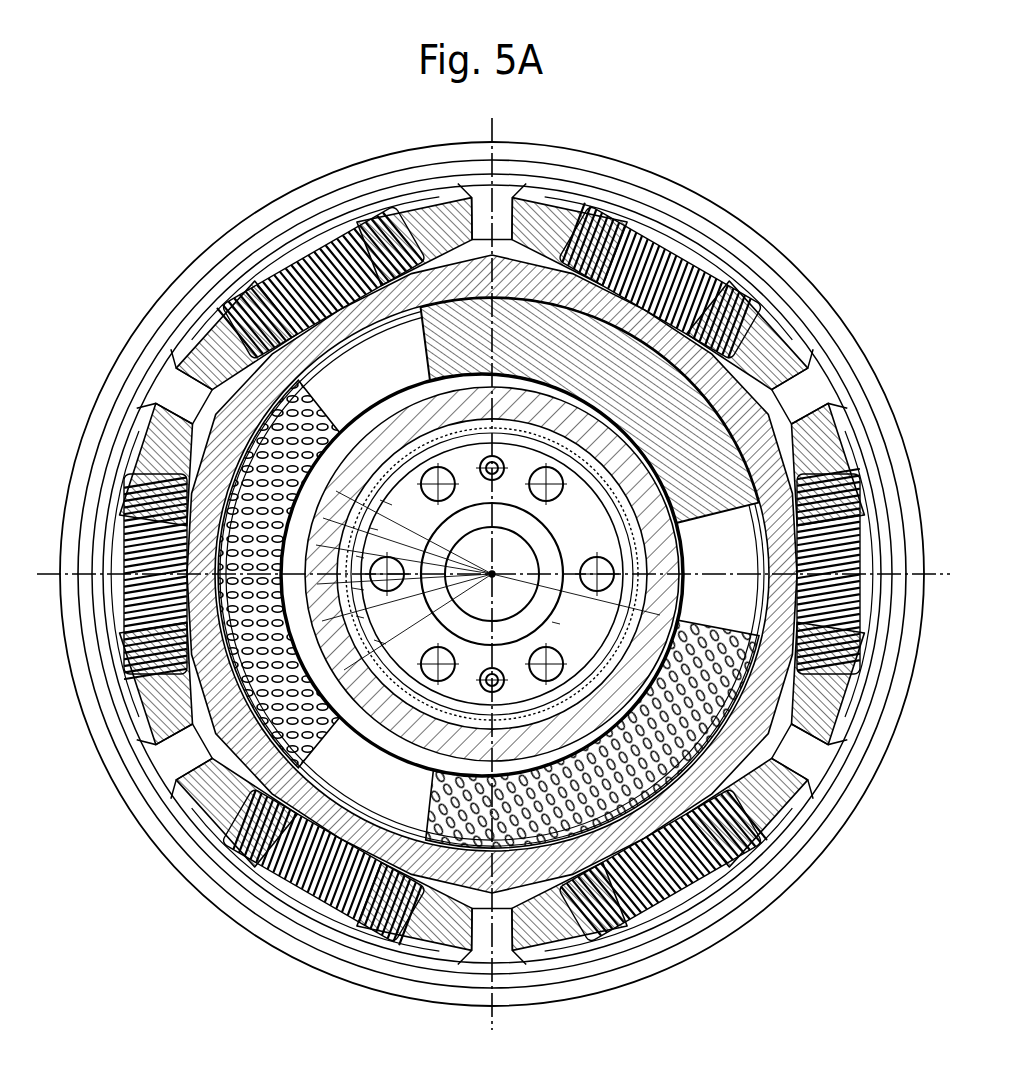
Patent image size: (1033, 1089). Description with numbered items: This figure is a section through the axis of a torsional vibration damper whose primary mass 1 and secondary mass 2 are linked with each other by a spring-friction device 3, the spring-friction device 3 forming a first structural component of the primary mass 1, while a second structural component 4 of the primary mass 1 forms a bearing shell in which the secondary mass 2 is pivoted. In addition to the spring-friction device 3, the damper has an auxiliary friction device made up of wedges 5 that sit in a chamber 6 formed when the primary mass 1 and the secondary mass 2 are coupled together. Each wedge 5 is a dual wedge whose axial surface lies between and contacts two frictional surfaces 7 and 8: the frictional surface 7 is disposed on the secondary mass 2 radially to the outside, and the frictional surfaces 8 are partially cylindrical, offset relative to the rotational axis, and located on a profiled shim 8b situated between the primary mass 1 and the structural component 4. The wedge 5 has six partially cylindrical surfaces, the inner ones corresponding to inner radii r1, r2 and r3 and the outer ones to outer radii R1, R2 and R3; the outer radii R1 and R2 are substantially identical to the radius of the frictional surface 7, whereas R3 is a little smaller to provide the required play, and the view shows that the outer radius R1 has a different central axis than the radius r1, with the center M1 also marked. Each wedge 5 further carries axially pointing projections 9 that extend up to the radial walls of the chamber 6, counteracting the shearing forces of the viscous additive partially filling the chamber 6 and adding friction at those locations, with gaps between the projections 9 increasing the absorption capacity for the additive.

The primary mass 1 is at (506, 200).
The secondary mass 2 is at (678, 272).
The spring-friction device 3 is at (582, 203).
The second structural component 4 is at (308, 266).
The wedge 5 is at (746, 392).
The chamber 6 is at (390, 778).
The frictional surface 7 is at (781, 745).
The frictional surface 8 is at (341, 742).
The profiled shim 8b is at (496, 854).
The projection 9 is at (232, 365).
The center M1 is at (488, 580).
The outer radius R1 is at (391, 500).
The outer radius R2 is at (385, 639).
The outer radius R3 is at (363, 585).
The inner radius r1 is at (469, 574).
The inner radius r2 is at (364, 613).
The inner radius r3 is at (364, 553).